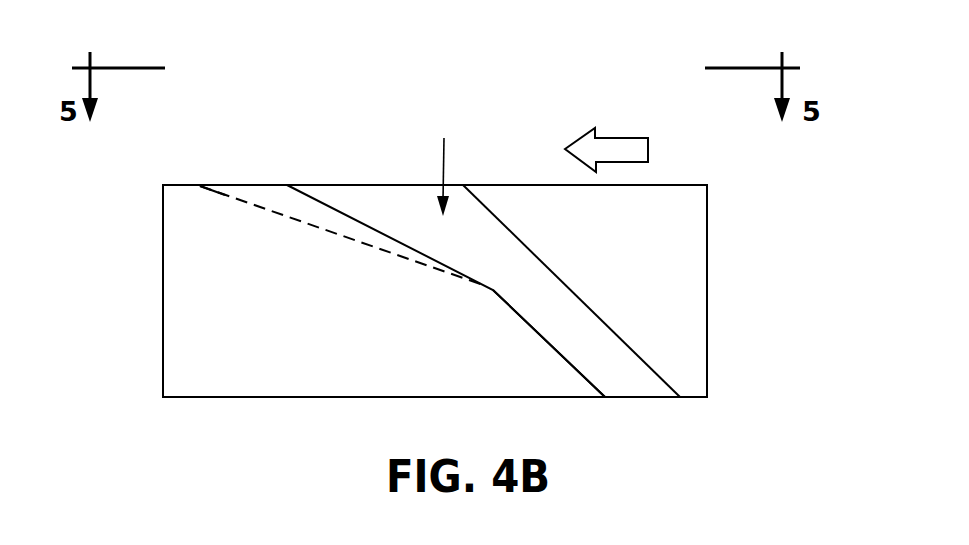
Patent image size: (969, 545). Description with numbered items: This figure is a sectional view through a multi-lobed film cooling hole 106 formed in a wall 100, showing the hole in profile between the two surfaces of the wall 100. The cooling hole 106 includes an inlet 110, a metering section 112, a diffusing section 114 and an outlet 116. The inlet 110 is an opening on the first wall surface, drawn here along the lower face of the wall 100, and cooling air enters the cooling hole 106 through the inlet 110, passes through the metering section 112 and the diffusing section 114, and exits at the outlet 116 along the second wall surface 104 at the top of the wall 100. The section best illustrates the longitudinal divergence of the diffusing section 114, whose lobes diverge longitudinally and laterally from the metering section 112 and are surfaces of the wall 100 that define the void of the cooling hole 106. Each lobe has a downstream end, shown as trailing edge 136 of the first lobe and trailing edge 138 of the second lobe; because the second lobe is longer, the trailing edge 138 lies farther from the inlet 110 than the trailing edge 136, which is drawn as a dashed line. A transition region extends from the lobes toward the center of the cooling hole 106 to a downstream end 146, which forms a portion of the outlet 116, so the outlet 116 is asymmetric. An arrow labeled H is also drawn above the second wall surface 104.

The wall 100 is at (740, 300).
The second wall surface 104 is at (677, 185).
The inlet 110 is at (634, 398).
The cooling hole 106 is at (556, 265).
The metering section 112 is at (578, 350).
The downstream end 146 is at (287, 185).
The trailing edge 136 is at (350, 244).
The trailing edge 138 is at (200, 185).
The outlet 116 is at (363, 185).
The diffusing section 114 is at (447, 164).
The horizontal direction arrow H is at (632, 138).